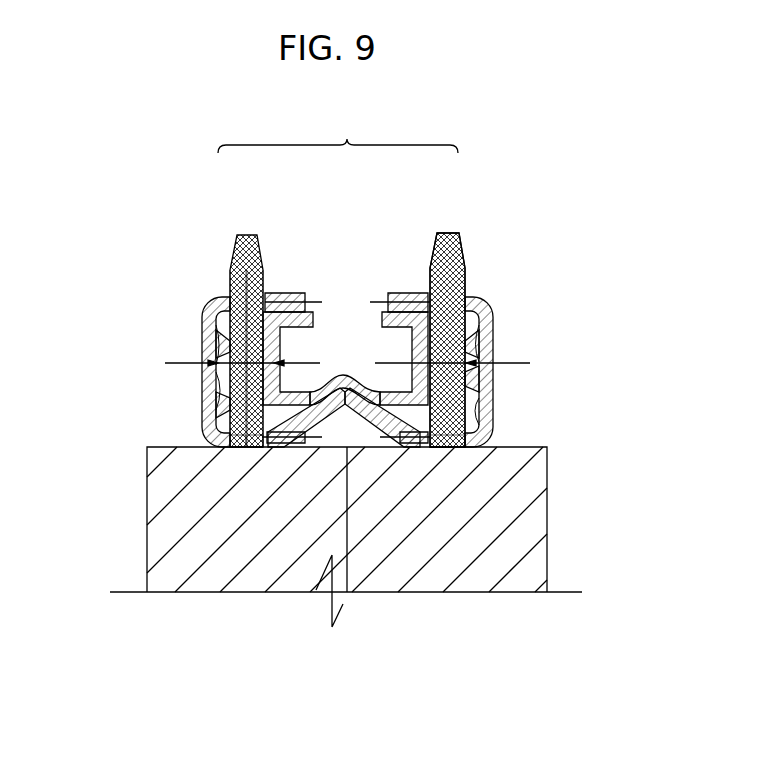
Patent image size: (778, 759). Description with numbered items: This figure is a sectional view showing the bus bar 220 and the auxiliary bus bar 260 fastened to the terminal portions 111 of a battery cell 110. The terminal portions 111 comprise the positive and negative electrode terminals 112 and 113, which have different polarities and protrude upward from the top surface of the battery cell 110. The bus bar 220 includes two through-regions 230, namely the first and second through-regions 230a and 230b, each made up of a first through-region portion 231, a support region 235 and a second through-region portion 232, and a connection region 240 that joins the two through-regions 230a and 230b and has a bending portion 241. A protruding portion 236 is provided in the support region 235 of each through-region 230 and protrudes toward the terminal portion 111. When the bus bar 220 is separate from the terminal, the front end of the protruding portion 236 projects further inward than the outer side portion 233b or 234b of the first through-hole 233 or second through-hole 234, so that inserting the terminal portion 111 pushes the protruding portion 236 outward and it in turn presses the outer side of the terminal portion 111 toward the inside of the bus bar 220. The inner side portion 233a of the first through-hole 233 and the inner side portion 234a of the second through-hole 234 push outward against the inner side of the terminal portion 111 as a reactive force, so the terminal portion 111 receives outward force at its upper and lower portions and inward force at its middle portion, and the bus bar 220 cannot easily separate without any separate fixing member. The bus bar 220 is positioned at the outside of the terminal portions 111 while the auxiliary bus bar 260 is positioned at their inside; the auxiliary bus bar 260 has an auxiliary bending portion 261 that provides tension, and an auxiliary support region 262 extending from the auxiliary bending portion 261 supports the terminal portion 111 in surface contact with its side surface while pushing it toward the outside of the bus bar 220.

The battery cell 110 is at (147, 502).
The terminal portion 111 is at (338, 131).
The positive electrode terminal 112 is at (247, 233).
The negative electrode terminal 113 is at (450, 233).
The bus bar 220 is at (355, 459).
The through-region 230 is at (531, 372).
The first through-region portion 231 is at (425, 412).
The second through-region portion 232 is at (492, 325).
The first through-hole 233 is at (473, 457).
The inner side portion of the first through-hole 233a is at (248, 447).
The outer side portion of the first through-hole 233b is at (232, 447).
The second through-hole 234 is at (475, 289).
The inner side portion of the second through-hole 234a is at (268, 258).
The outer side portion of the second through-hole 234b is at (226, 283).
The support region 235 is at (497, 378).
The protruding portion 236 is at (420, 293).
The connection region 240 is at (313, 457).
The bending portion 241 is at (363, 447).
The auxiliary bus bar 260 is at (203, 402).
The auxiliary bending portion 261 is at (343, 374).
The auxiliary support region 262 is at (205, 348).
The first through-region 230a is at (287, 462).
The second through-region 230b is at (415, 462).